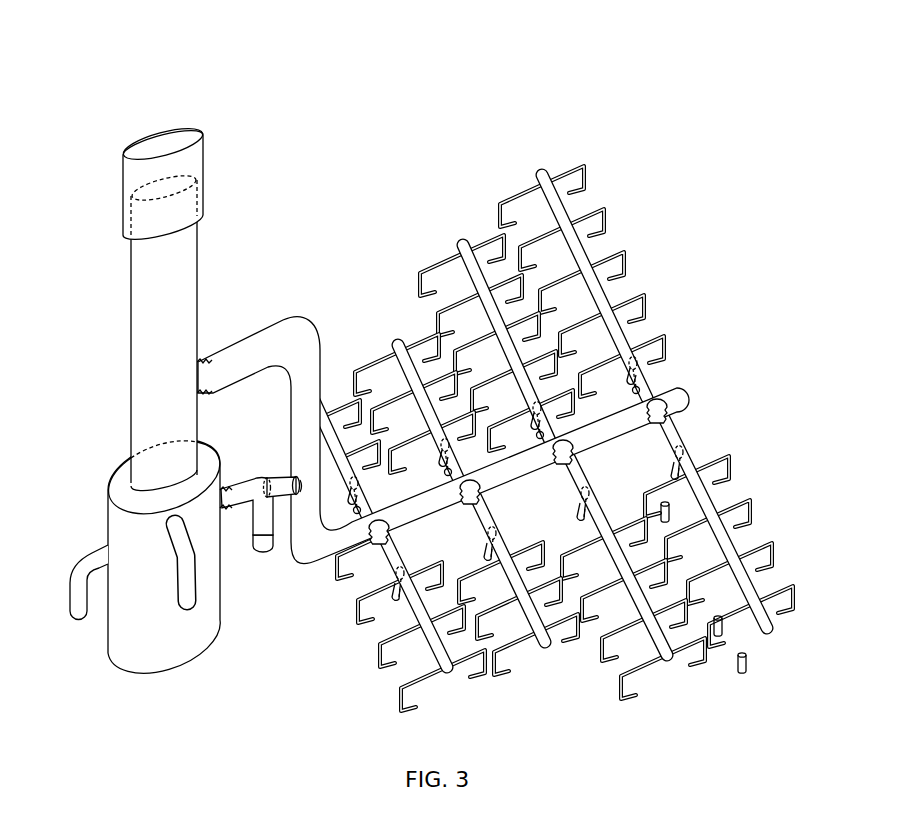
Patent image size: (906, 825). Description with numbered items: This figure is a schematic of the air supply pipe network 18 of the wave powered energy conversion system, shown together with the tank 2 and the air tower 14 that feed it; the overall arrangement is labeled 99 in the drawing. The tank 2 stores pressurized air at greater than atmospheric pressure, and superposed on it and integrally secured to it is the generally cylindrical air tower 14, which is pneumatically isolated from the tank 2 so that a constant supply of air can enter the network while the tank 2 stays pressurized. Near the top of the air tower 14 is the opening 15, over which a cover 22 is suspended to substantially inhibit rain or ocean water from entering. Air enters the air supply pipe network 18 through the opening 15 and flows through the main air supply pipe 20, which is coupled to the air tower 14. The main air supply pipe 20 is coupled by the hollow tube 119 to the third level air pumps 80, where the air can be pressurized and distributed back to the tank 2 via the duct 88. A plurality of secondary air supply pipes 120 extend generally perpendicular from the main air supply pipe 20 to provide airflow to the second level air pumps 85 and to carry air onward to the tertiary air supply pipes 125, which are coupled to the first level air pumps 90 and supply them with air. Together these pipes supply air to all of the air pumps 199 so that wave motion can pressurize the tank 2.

The irrigation system 99 is at (773, 130).
The air supply pipe network 18 is at (402, 220).
The tertiary air supply pipes 125 is at (580, 165).
The secondary air supply pipes 120 is at (585, 245).
The main air supply pipe 20 is at (293, 322).
The second level air pumps 85 is at (683, 442).
The air pumps 199 is at (685, 468).
The first level air pumps 90 is at (748, 664).
The tank 2 is at (107, 512).
The air tower 14 is at (198, 270).
The cover 22 is at (204, 168).
The opening 15 is at (158, 182).
The duct 88 is at (80, 558).
The tube 119 is at (284, 479).
The third level air pumps 80 is at (258, 556).